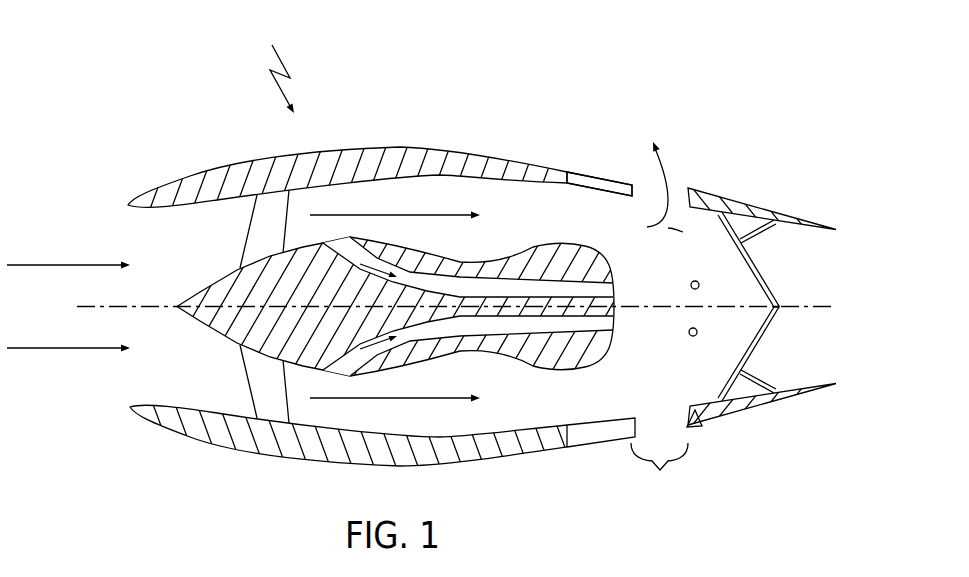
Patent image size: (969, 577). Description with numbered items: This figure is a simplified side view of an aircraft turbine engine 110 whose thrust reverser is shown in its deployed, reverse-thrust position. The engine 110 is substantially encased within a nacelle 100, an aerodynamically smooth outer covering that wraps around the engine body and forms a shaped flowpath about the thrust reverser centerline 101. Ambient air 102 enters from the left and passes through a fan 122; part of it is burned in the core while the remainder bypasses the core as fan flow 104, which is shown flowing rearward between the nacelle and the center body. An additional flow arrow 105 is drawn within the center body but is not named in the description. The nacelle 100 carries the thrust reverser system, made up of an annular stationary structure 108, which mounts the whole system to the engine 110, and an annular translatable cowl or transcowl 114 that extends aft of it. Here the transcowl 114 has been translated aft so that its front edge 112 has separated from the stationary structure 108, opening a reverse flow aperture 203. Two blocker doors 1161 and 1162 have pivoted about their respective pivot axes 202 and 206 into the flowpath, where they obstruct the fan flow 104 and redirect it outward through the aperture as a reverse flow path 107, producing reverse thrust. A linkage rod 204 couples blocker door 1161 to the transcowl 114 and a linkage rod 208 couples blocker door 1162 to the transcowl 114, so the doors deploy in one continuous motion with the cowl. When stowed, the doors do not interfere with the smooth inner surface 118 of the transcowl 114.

The nacelle 100 is at (268, 65).
The thrust reverser centerline 101 is at (783, 307).
The ambient air 102 is at (77, 264).
The fan flow 104 is at (406, 213).
The core duct airflow 105 is at (382, 258).
The reverse flow path 107 is at (683, 232).
The stationary structure 108 is at (595, 188).
The turbine engine 110 is at (548, 371).
The front edge of the transcowl 112 is at (688, 192).
The transcowl 114 is at (727, 198).
The inner surface of transcowl 118 is at (697, 426).
The fan 122 is at (280, 198).
The pivot axis 202 is at (691, 285).
The reverse flow aperture 203 is at (659, 473).
The linkage rod 204 is at (786, 229).
The pivot axis 206 is at (693, 337).
The linkage rod 208 is at (786, 388).
The blocker door 1161 is at (752, 258).
The blocker door 1162 is at (752, 355).